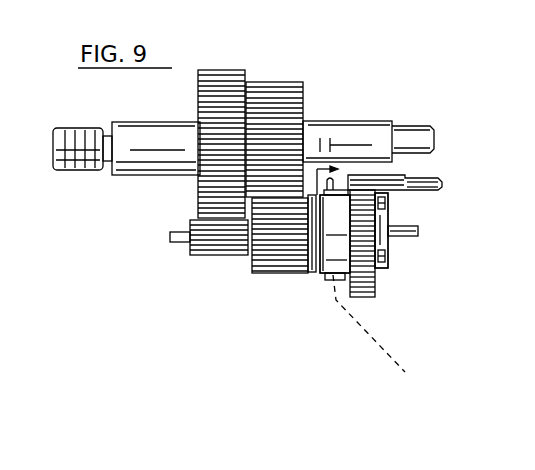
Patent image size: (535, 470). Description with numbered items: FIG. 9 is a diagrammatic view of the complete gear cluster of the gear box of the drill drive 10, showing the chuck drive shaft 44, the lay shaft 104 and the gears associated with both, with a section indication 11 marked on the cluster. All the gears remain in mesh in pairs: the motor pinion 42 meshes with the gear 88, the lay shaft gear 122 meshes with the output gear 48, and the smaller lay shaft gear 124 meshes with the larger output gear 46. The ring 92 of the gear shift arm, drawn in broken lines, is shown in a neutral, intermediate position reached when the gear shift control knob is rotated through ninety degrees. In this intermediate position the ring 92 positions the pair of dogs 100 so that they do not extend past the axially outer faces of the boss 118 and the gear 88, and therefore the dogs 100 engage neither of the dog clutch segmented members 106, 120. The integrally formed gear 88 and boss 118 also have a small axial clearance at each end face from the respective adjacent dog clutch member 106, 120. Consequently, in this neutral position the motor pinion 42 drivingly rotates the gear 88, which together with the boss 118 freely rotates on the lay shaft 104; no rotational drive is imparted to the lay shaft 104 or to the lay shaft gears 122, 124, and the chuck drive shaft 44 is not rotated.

The drive assembly 10 is at (452, 226).
The section line 11 is at (322, 285).
The motor pinion 42 is at (392, 178).
The chuck drive shaft 44 is at (370, 130).
The larger output gear 46 is at (218, 70).
The output gear 48 is at (283, 82).
The gear 88 is at (340, 243).
The ring 92 is at (336, 300).
The pair of dogs 100 is at (340, 196).
The lay shaft 104 is at (412, 236).
The dog clutch segmented member 106 is at (388, 262).
The boss 118 is at (378, 272).
The dog clutch segmented member 120 is at (312, 272).
The lay shaft gear 122 is at (278, 275).
The smaller lay shaft gear 124 is at (218, 257).